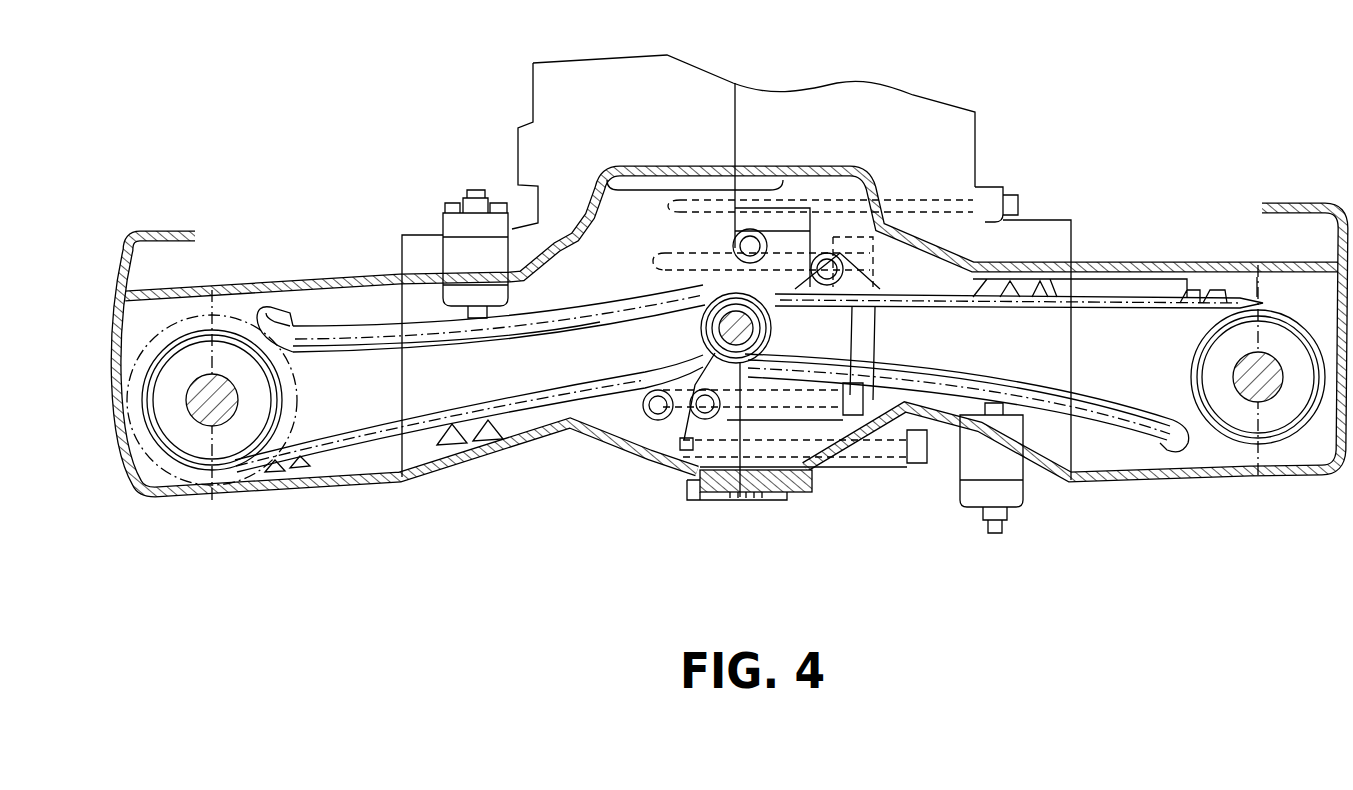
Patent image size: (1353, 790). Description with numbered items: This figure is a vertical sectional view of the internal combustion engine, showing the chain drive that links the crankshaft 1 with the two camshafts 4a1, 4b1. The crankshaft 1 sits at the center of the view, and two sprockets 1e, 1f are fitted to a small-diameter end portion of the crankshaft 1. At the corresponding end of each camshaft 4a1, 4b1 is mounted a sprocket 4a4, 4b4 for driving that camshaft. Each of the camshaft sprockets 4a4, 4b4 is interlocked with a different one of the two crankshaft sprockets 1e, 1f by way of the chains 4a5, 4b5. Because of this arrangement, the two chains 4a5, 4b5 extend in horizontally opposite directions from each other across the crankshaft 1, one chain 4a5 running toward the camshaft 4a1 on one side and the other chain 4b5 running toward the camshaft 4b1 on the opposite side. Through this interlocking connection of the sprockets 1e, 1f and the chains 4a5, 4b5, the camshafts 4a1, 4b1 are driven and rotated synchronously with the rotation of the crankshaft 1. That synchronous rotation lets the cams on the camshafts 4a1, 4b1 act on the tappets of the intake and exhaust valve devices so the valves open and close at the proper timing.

The crankshaft 1 is at (750, 357).
The sprocket 1e is at (703, 363).
The sprocket 1f is at (691, 475).
The camshaft 4a1 is at (1252, 397).
The sprocket 4a4 is at (1282, 408).
The chain 4a5 is at (937, 372).
The camshaft 4b1 is at (227, 423).
The sprocket 4b4 is at (200, 437).
The chain 4b5 is at (530, 400).